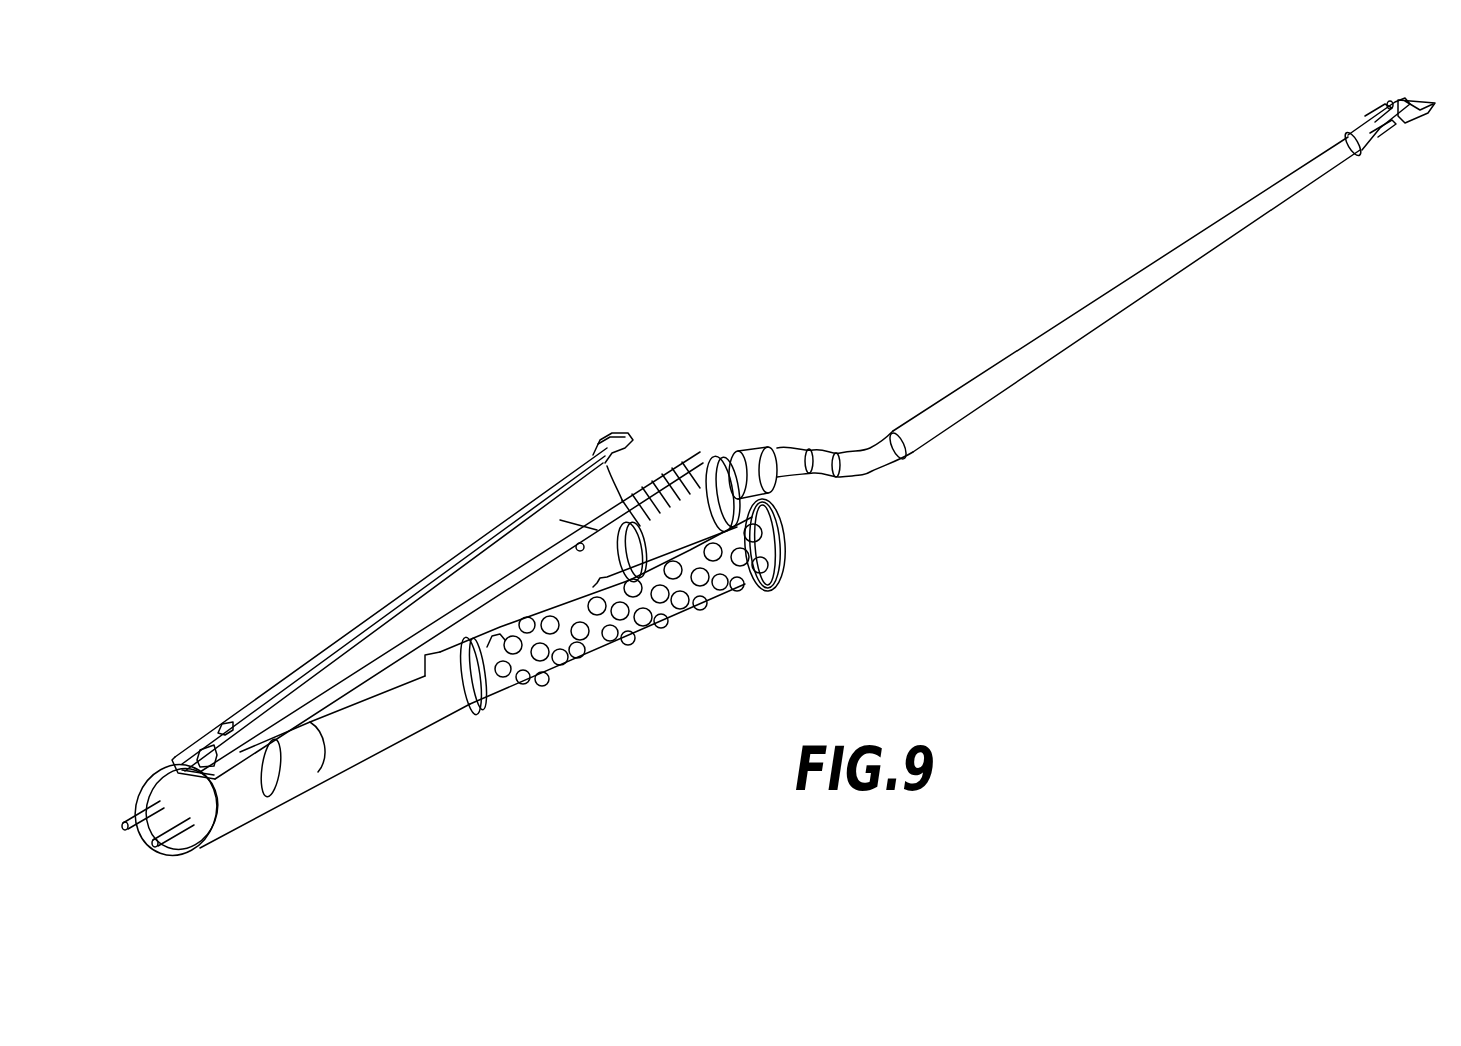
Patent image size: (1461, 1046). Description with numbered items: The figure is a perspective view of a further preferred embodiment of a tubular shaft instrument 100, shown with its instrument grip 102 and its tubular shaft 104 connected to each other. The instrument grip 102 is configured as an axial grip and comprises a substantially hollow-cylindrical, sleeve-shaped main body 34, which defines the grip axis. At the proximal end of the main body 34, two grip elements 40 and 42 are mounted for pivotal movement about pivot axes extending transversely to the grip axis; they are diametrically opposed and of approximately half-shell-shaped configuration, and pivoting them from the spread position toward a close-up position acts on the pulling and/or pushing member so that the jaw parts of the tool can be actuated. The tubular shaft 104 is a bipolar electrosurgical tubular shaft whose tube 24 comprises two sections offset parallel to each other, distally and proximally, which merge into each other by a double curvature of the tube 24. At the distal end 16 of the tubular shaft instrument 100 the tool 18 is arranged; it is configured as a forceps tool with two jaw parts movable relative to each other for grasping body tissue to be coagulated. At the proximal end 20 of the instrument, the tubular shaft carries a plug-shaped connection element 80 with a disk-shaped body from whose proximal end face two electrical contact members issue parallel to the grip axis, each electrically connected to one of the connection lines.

The tubular shaft instrument 100 is at (766, 348).
The proximal end 20 is at (207, 856).
The connection element 80 is at (240, 806).
The main body 34 is at (505, 606).
The grip element 40 is at (507, 680).
The instrument grip 102 is at (386, 576).
The grip element 42 is at (466, 584).
The tube 24 is at (1100, 313).
The tubular shaft 104 is at (1135, 318).
The distal end 16 is at (1372, 94).
The tool 18 is at (1423, 120).